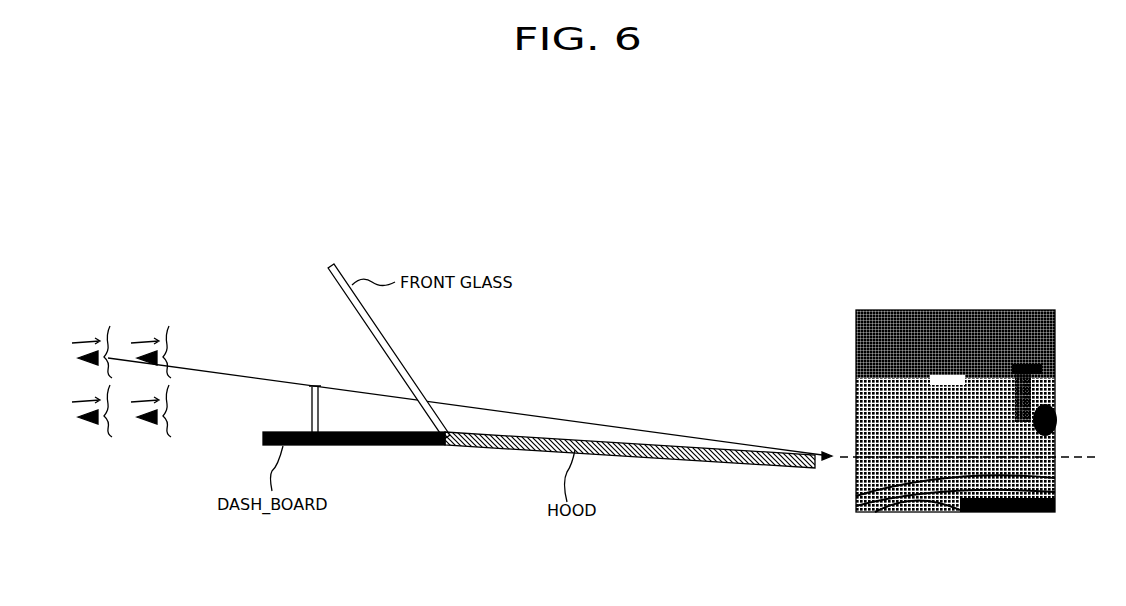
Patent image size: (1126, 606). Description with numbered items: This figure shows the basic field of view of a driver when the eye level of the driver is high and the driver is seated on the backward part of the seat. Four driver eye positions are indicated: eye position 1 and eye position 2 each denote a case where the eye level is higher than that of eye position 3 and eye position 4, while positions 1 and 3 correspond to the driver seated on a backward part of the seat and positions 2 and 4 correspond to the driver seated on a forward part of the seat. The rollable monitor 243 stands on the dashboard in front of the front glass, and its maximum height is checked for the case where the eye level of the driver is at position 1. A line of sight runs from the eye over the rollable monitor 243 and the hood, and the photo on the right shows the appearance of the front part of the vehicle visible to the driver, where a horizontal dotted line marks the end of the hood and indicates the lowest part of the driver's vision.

The rollable monitor 243 is at (318, 412).
The eye level position ① 1 is at (92, 339).
The eye level position ② 2 is at (151, 339).
The eye level position ③ 3 is at (92, 424).
The eye level position ④ 4 is at (151, 424).